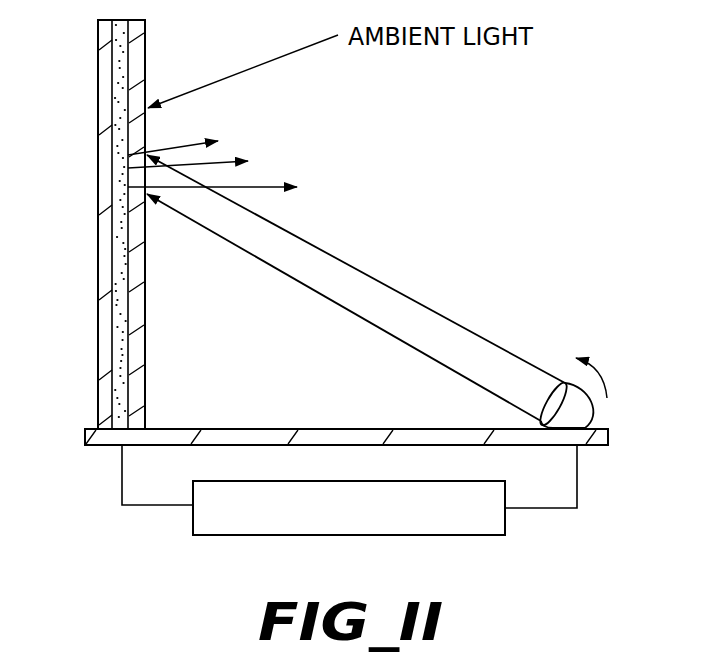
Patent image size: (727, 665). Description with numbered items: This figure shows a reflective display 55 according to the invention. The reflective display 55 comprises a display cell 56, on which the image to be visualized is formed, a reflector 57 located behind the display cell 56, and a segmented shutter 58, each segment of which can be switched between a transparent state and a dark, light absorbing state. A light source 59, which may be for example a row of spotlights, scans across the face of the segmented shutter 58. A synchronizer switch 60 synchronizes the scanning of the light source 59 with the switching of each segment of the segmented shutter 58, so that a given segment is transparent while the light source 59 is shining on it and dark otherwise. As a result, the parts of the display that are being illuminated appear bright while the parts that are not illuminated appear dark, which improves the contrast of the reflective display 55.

The reflective display 55 is at (596, 448).
The display cell 56 is at (118, 310).
The reflector 57 is at (104, 77).
The segmented shutter 58 is at (138, 350).
The light source 59 is at (597, 410).
The synchronizer switch 60 is at (193, 518).